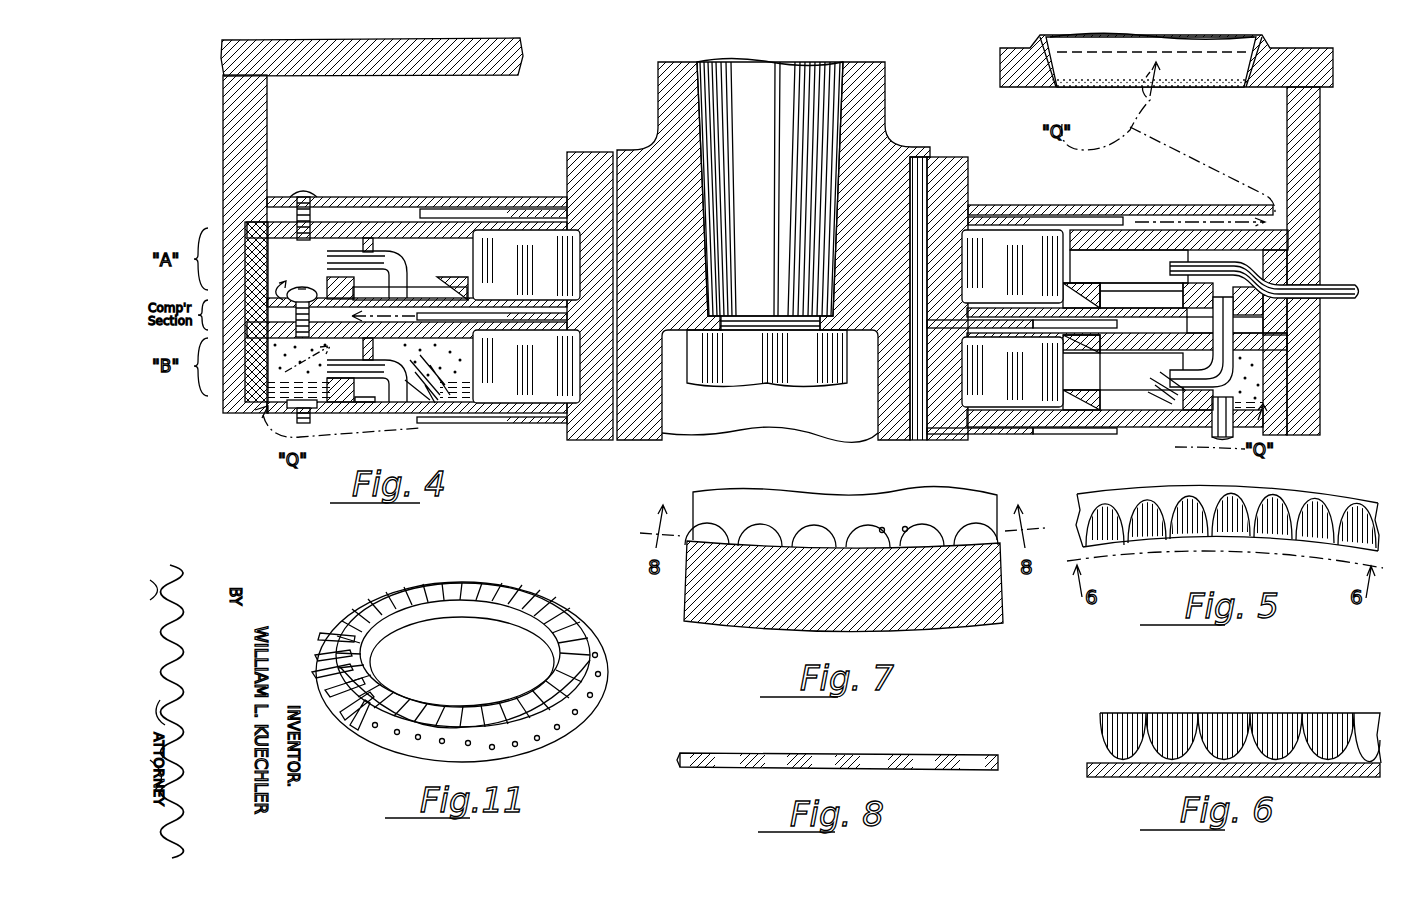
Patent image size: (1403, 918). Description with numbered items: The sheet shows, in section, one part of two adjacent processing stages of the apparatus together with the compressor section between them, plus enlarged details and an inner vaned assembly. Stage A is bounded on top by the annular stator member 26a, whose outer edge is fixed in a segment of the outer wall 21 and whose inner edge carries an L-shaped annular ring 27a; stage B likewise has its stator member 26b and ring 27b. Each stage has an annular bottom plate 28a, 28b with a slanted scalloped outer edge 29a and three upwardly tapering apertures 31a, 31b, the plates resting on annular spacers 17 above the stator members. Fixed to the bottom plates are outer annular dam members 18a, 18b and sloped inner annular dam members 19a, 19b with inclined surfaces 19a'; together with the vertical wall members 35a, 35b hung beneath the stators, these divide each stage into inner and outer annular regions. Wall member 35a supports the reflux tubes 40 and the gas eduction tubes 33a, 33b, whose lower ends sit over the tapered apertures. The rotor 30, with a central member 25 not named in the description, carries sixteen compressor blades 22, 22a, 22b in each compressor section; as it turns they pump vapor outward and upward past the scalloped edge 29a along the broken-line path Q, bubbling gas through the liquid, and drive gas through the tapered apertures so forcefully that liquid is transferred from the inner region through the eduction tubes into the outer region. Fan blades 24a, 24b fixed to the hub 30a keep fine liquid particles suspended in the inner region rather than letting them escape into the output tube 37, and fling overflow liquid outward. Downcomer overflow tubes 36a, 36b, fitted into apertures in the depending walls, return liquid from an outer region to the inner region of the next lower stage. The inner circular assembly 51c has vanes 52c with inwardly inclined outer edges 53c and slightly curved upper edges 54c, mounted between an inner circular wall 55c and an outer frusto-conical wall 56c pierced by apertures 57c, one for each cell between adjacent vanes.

In FIG. 4, the outer wall 21 is at (250, 151).
In FIG. 7, the outer wall 21 is at (868, 605).
In FIG. 4, the shaft 25 is at (735, 104).
In FIG. 4, the rotor member 30 is at (860, 126).
In FIG. 4, the hub 30a is at (955, 168).
In FIG. 4, the output tube 37 is at (1192, 70).
In FIG. 4, the annular ring 27a is at (1060, 225).
In FIG. 4, the compressor blades 22 is at (1105, 220).
In FIG. 4, the wall member 35a is at (1160, 250).
In FIG. 4, the stator member 26a is at (1195, 238).
In FIG. 4, the fan blades 24a is at (1040, 258).
In FIG. 4, the annular bottom plate 28a is at (1032, 308).
In FIG. 7, the annular bottom plate 28a is at (810, 510).
In FIG. 6, the annular bottom plate 28a is at (1346, 776).
In FIG. 8, the annular bottom plate 28a is at (806, 756).
In FIG. 4, the outer annular dam member 18a is at (1190, 287).
In FIG. 4, the inner annular dam member 19a is at (1141, 288).
In FIG. 5, the inner annular dam member 19a is at (1227, 506).
In FIG. 6, the inner annular dam member 19a is at (1240, 720).
In FIG. 5, the inclined surfaces 19a' is at (1231, 538).
In FIG. 6, the inclined surfaces 19a' is at (1240, 722).
In FIG. 4, the reflux tubes 40 is at (1330, 288).
In FIG. 4, the outer scalloped edges 29a is at (1280, 312).
In FIG. 7, the outer scalloped edges 29a is at (905, 528).
In FIG. 8, the outer scalloped edges 29a is at (906, 758).
In FIG. 4, the stator member 26b is at (1290, 350).
In FIG. 4, the downcomer overflow tube 36a is at (1240, 362).
In FIG. 4, the annular ring 27b is at (1068, 352).
In FIG. 4, the compressor blades 22a is at (1110, 330).
In FIG. 4, the fan blades 24b is at (1018, 390).
In FIG. 4, the tube 22b is at (1055, 434).
In FIG. 4, the inner annular dam member 19b is at (1090, 410).
In FIG. 4, the annular bottom plate 28b is at (1130, 427).
In FIG. 4, the outer annular dam member 18b is at (1190, 410).
In FIG. 4, the downcomer overflow tube 36b is at (1215, 432).
In FIG. 4, the gas eduction tube 33a is at (342, 262).
In FIG. 4, the annular spacers 17 is at (327, 292).
In FIG. 4, the upwardly tapering aperture 31a is at (408, 302).
In FIG. 4, the wall member 35b is at (368, 388).
In FIG. 4, the upwardly tapering aperture 31b is at (392, 410).
In FIG. 4, the gas eduction tube 33b is at (408, 385).
In FIG. 11, the inner circular assembly 51c is at (560, 730).
In FIG. 11, the vanes 52c is at (352, 712).
In FIG. 11, the inwardly inclined outer edges 53c is at (340, 682).
In FIG. 11, the curved upper edges 54c is at (365, 650).
In FIG. 11, the inner circular wall 55c is at (522, 628).
In FIG. 11, the outer frusto-conical wall 56c is at (603, 669).
In FIG. 11, the apertures 57c is at (517, 746).